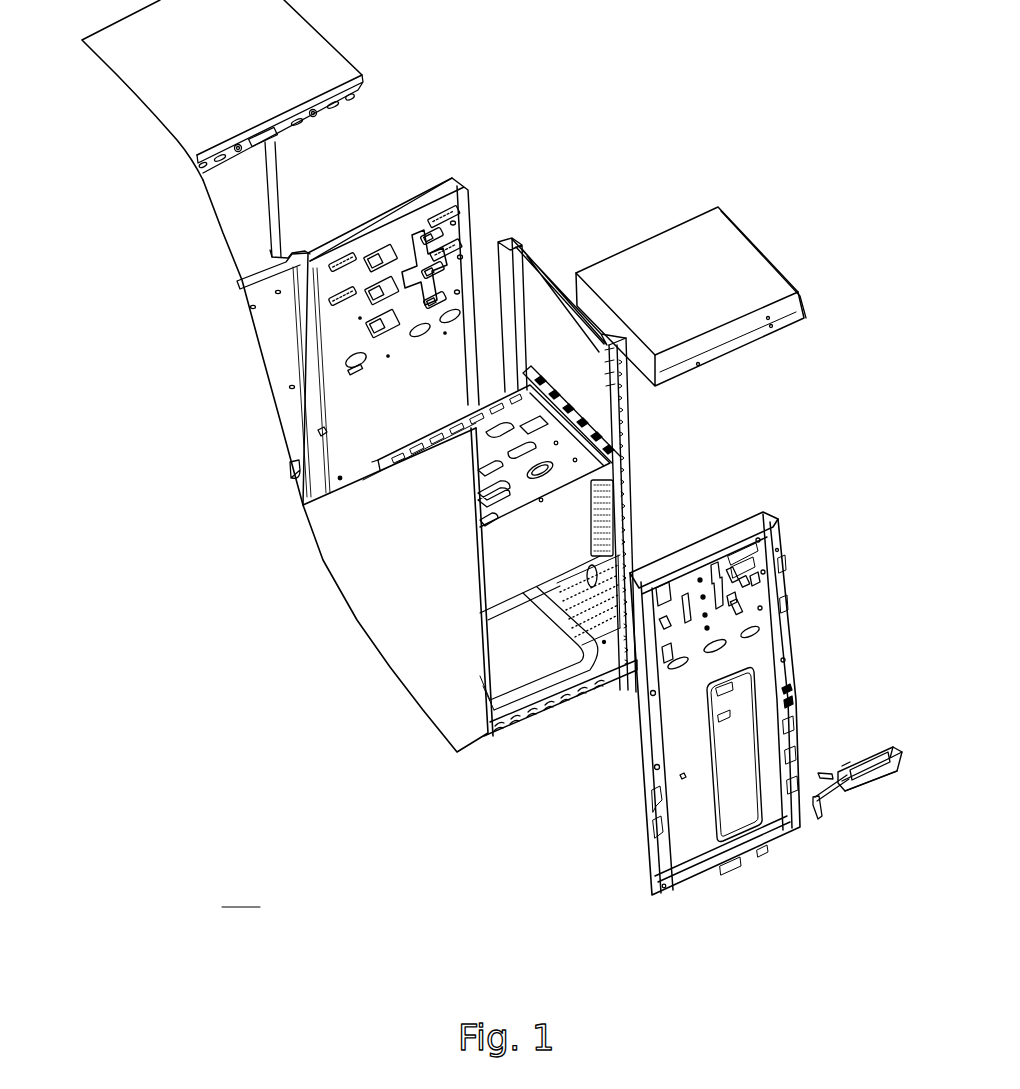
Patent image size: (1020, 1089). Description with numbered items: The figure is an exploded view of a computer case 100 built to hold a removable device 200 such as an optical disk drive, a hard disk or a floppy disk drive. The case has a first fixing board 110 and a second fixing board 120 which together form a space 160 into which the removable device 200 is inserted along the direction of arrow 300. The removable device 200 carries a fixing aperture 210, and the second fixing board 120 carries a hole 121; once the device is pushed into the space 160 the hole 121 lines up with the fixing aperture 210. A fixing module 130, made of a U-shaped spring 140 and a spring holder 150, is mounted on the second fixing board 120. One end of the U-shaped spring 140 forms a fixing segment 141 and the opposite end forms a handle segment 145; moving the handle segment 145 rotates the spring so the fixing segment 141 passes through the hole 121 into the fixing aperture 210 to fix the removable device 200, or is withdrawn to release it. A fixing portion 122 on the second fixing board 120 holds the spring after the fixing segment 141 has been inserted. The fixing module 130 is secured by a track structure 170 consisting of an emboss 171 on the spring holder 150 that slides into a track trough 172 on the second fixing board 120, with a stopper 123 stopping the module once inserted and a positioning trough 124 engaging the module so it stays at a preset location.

The computer case 100 is at (287, 454).
The first fixing board 110 is at (466, 190).
The second fixing board 120 is at (758, 512).
The hole 121 is at (664, 595).
The fixing portion 122 is at (662, 655).
The stopper 123 is at (713, 565).
The positioning trough 124 is at (690, 600).
The fixing module 130 is at (887, 732).
The U-shaped spring 140 is at (833, 796).
The fixing segment 141 is at (829, 776).
The handle segment 145 is at (818, 812).
The spring holder 150 is at (885, 771).
The space 160 is at (632, 438).
The track structure 170 is at (848, 597).
The emboss 171 is at (857, 762).
The track trough 172 is at (733, 600).
The removable device 200 is at (646, 242).
The fixing aperture 210 is at (704, 352).
The arrow 300 is at (586, 345).